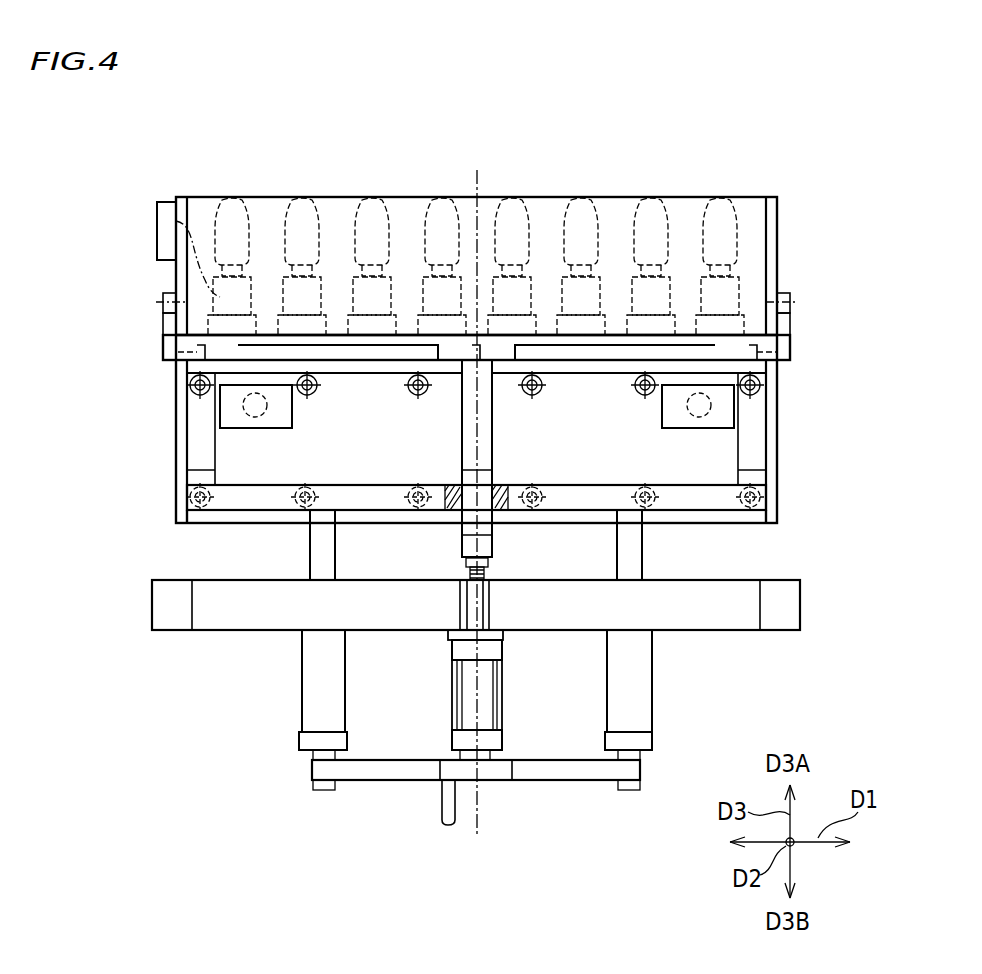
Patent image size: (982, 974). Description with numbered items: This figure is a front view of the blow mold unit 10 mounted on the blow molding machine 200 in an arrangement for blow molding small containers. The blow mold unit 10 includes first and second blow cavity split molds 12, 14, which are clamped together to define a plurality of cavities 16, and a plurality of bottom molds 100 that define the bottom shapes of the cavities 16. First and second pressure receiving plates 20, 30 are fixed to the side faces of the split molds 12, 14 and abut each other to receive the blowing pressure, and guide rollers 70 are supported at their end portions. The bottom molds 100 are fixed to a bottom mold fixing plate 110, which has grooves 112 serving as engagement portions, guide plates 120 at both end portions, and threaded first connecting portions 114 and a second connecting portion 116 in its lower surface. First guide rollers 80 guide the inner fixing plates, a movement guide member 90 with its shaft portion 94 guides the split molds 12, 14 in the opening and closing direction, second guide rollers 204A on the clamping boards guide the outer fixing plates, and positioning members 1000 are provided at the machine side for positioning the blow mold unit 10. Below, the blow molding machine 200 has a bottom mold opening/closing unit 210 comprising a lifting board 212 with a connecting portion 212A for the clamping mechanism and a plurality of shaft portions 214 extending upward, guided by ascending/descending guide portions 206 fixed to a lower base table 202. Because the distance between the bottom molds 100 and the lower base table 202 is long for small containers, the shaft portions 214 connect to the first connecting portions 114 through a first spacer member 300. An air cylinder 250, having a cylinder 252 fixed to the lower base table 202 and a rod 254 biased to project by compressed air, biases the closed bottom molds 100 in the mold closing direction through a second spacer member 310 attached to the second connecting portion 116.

The blow mold unit 10 is at (818, 186).
The positioning member 1000 is at (150, 202).
The bottom mold 100 is at (176, 221).
The first blow cavity split mold 12 is at (511, 225).
The second blow cavity split mold 14 is at (540, 200).
The cavity 16 is at (400, 192).
The first pressure receiving plate 20 is at (476, 360).
The second pressure receiving plate 30 is at (176, 262).
The guide roller 70 is at (163, 298).
The first guide roller 80 is at (313, 396).
The movement guide member 90 is at (475, 408).
The shaft portion 94 is at (222, 412).
The bottom mold fixing plate 110 is at (163, 350).
The groove 112 is at (373, 352).
The first connecting portion 114 is at (163, 362).
The second connecting portion 116 is at (487, 352).
The guide plate 120 is at (163, 324).
The blow molding machine 200 is at (205, 655).
The lower base table 202 is at (210, 604).
The second guide roller 204A is at (298, 502).
The ascending/descending guide portion 206 is at (302, 692).
The bottom mold opening/closing unit 210 is at (290, 770).
The lifting board 212 is at (380, 782).
The connecting portion 212A is at (455, 805).
The shaft portion 214 is at (336, 552).
The air cylinder 250 is at (450, 694).
The cylinder 252 is at (502, 690).
The rod 254 is at (484, 606).
The first spacer member 300 is at (232, 505).
The second spacer member 310 is at (462, 450).